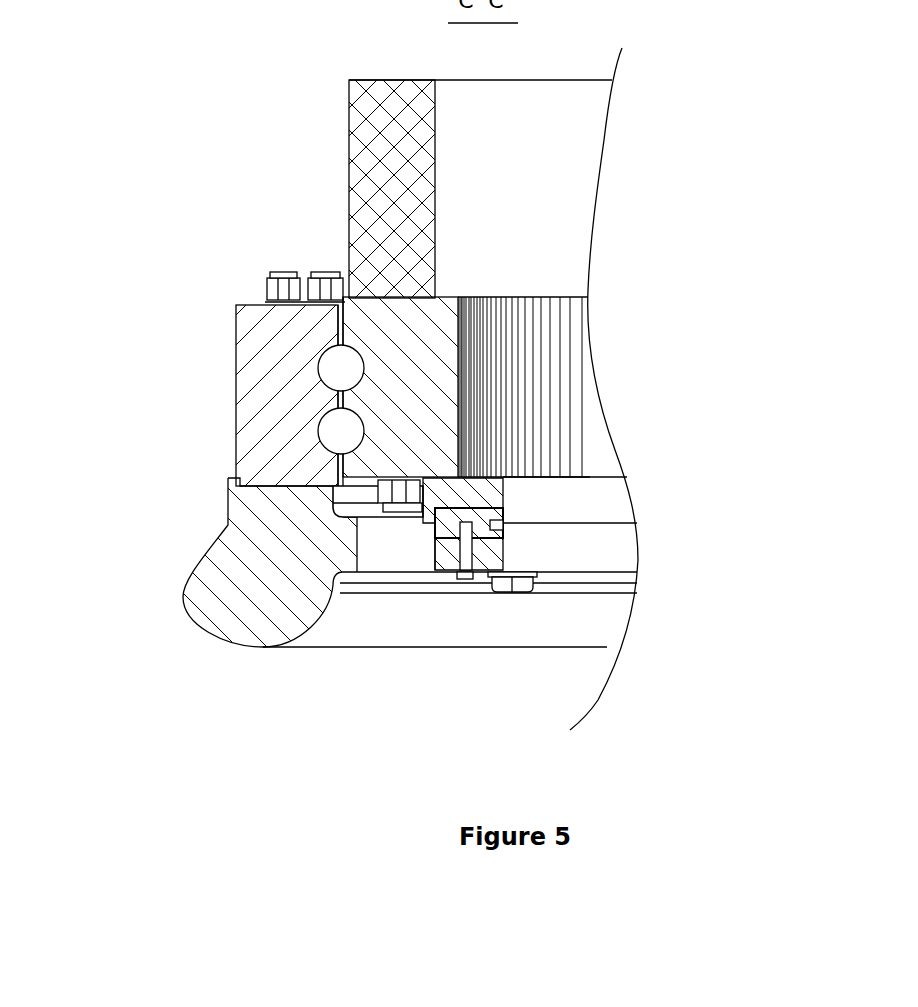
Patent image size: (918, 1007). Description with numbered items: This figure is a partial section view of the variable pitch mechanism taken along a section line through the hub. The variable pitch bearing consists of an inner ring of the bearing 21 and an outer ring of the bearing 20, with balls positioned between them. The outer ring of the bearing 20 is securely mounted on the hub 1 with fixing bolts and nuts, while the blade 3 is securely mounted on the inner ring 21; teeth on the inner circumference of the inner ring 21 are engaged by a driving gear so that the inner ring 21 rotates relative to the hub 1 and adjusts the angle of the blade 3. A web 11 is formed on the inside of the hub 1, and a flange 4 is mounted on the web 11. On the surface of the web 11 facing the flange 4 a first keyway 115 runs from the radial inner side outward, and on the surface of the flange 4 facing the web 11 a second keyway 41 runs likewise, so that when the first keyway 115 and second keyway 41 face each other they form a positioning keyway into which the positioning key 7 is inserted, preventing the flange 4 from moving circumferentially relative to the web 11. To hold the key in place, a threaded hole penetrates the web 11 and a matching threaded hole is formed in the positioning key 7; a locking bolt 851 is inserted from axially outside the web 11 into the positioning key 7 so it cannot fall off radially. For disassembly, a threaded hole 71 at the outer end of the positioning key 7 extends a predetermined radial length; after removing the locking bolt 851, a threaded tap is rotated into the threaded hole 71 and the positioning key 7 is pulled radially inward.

The hub 1 is at (230, 584).
The blade 3 is at (393, 147).
The flange 4 is at (503, 487).
The positioning key 7 is at (443, 527).
The web 11 is at (435, 553).
The outer ring of the bearing 20 is at (290, 385).
The inner ring of the bearing 21 is at (403, 318).
The second keyway 41 is at (503, 510).
The threaded hole 71 is at (468, 530).
The first keyway 115 is at (503, 540).
The locking bolt 851 is at (507, 593).